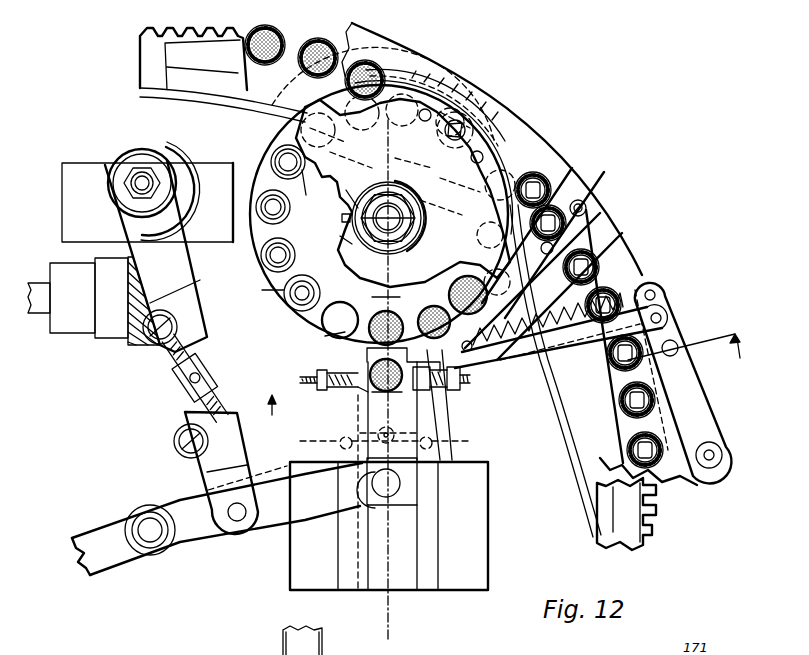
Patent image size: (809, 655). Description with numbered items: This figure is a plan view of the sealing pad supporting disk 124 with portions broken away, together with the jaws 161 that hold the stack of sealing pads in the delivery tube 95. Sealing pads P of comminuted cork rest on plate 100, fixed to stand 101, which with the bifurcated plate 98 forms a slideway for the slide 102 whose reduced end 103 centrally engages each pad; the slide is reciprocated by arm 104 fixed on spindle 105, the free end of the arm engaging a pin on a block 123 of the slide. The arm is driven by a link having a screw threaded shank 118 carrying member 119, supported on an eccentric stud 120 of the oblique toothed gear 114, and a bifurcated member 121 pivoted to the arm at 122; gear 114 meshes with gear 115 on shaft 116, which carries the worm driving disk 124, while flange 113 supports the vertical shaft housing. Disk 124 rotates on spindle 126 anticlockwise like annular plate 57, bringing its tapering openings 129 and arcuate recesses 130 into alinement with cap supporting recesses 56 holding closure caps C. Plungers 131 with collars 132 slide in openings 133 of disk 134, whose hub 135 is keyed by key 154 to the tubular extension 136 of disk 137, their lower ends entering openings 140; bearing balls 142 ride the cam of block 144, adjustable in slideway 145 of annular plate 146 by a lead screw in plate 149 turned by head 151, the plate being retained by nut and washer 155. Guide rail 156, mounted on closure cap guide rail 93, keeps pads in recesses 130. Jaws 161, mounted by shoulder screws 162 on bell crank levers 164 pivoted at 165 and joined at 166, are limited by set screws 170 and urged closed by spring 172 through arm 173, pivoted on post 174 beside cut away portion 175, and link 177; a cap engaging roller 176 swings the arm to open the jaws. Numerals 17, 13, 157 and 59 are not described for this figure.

The frame 17 is at (507, 72).
The spindle 126 is at (416, 228).
The nut and washer 155 is at (405, 241).
The tubular extension 136 is at (348, 190).
The key 154 is at (342, 220).
The elongated hub 135 is at (340, 237).
The annular plate 146 is at (306, 172).
The disk 134 is at (263, 173).
The plungers 131 is at (291, 207).
The bearing ball 142 is at (274, 247).
The annular collar 132 is at (310, 281).
The disk 137 is at (305, 320).
The openings 133 is at (312, 118).
The openings 129 is at (490, 213).
The openings 140 is at (272, 291).
The vertical slideway 145 is at (440, 112).
The cam block 144 is at (470, 136).
The plate 149 is at (422, 92).
The manipulating head 151 is at (459, 118).
The arcuate recesses 130 is at (386, 292).
The disk 124 is at (335, 329).
The sealing pad P is at (302, 62).
The annular plate 57 is at (266, 96).
The closure cap C is at (312, 38).
The cap supporting recess 56 is at (580, 198).
The guide rail 156 is at (521, 279).
The spring 172 is at (570, 390).
The set-screws 170 is at (300, 380).
The shoulder-screws 162 is at (312, 385).
The jaws 161 is at (340, 387).
The section line 13 is at (510, 382).
The delivery tube 95 is at (352, 391).
The bell crank levers 164 is at (372, 398).
The pivot 165 is at (342, 444).
The pin and slot connection 166 is at (395, 440).
The sealing pad engaging end 103 is at (366, 355).
The slide 102 is at (425, 410).
The block and pin 123 is at (402, 485).
The stand 101 is at (482, 539).
The bifurcated plate 98 is at (430, 526).
The plate 100 is at (412, 592).
The annular flange 113 is at (90, 173).
The stud 120 is at (148, 176).
The oblique toothed gear 114 is at (194, 184).
The member 119 is at (182, 278).
The toothed gear 115 is at (135, 351).
The shaft 116 is at (244, 309).
The screw threaded shank 118 is at (182, 438).
The bifurcated member 121 is at (240, 455).
The arm 104 is at (207, 546).
The bar end 157 is at (98, 541).
The spindle 105 is at (151, 535).
The pivot 122 is at (243, 525).
The arm 173 is at (706, 411).
The link 177 is at (661, 300).
The roller 176 is at (668, 343).
The cut away portion 175 is at (690, 386).
The post 174 is at (723, 457).
The closure cap guide rail 93 is at (700, 481).
The rack 59 is at (626, 549).